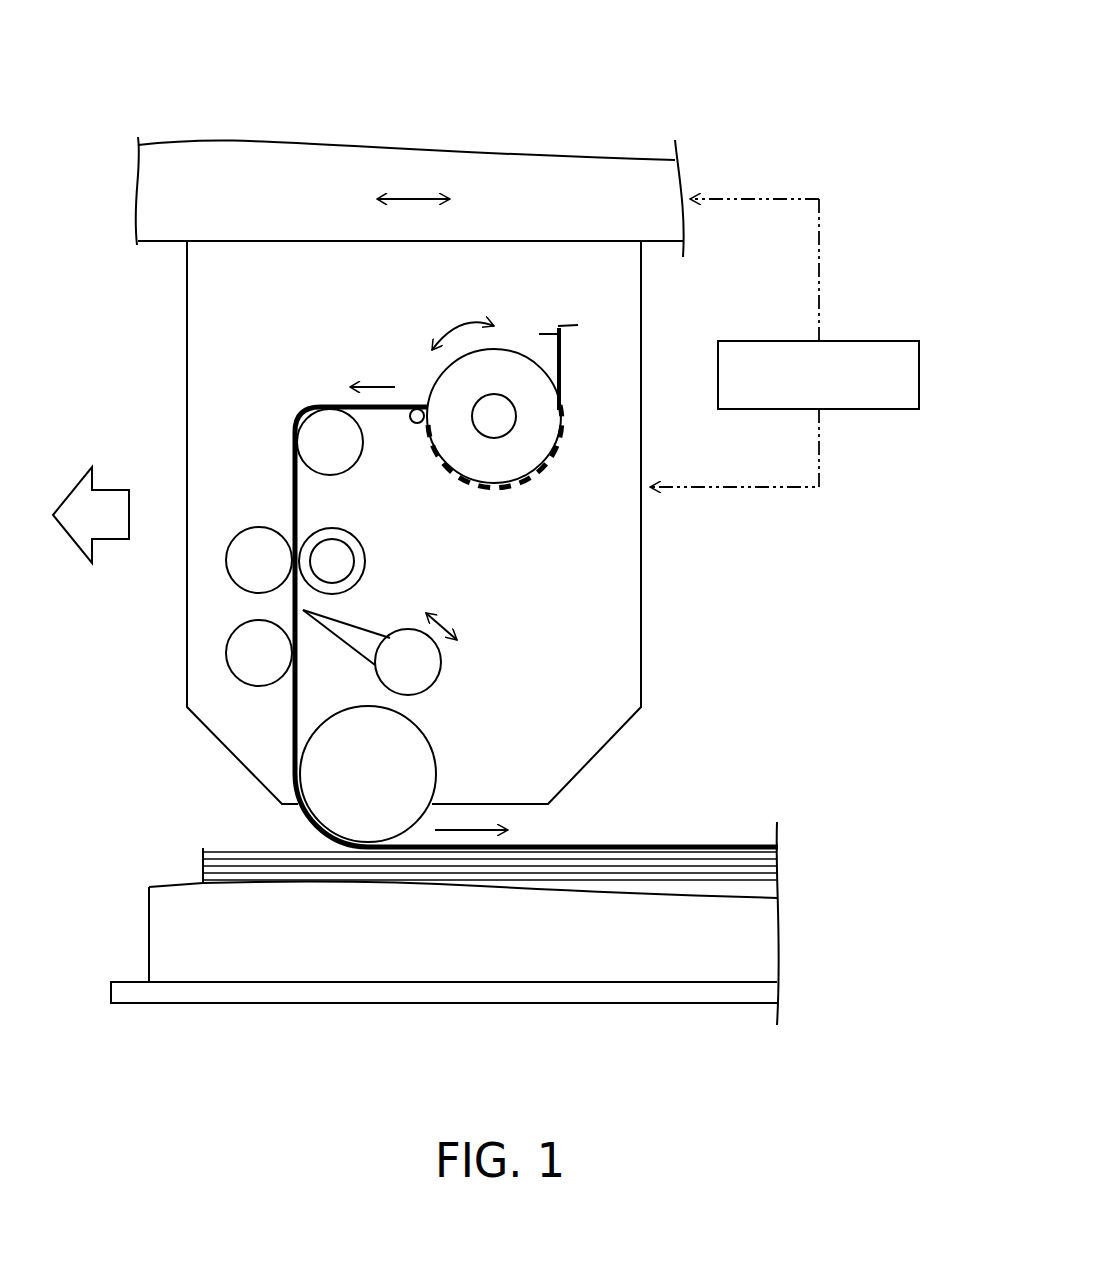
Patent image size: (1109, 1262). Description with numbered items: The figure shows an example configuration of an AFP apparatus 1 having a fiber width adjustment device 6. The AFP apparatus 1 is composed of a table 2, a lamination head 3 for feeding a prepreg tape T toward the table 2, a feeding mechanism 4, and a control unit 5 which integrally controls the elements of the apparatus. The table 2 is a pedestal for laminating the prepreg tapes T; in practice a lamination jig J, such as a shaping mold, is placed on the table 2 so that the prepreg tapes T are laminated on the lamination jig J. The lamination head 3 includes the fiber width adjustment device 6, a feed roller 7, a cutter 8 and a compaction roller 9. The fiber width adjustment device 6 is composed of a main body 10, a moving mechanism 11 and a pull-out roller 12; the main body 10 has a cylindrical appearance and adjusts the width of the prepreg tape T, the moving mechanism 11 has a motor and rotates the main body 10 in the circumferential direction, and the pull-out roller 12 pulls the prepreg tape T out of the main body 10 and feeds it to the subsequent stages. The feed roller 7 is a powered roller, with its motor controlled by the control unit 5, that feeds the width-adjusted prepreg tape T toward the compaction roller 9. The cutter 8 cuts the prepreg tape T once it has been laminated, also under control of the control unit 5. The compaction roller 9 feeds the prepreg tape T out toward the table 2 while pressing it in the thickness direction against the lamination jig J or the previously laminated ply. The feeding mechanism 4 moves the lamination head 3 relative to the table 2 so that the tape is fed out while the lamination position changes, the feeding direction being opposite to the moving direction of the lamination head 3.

The AFP apparatus 1 is at (299, 96).
The table 2 is at (138, 985).
The lamination head 3 is at (648, 603).
The feeding mechanism 4 is at (160, 243).
The control unit 5 is at (850, 341).
The fiber width adjustment device 6 is at (430, 370).
The feed roller 7 is at (366, 553).
The cutter 8 is at (442, 666).
The compaction roller 9 is at (436, 755).
The main body 10 is at (432, 387).
The moving mechanism 11 is at (497, 394).
The pull-out roller 12 is at (416, 424).
The prepreg tape T is at (292, 488).
The lamination jig J is at (157, 882).